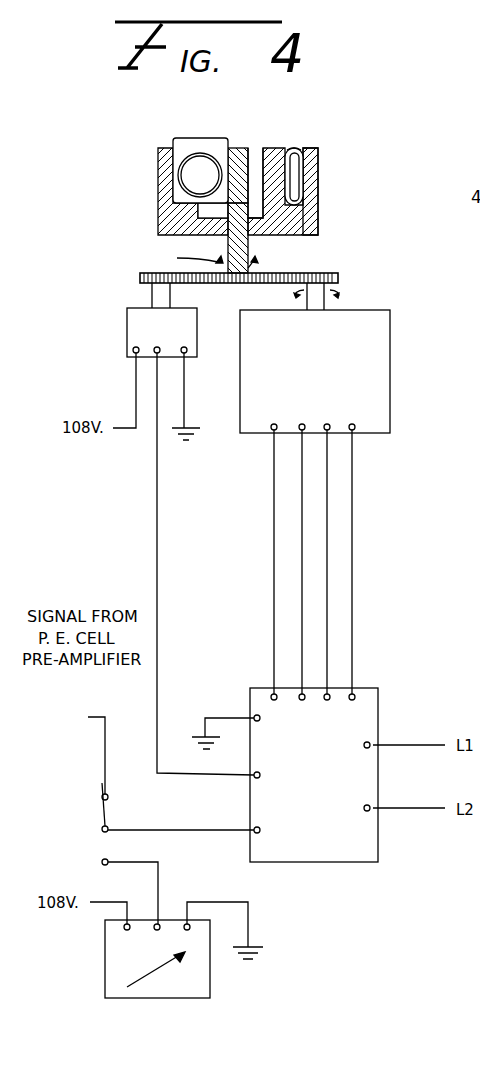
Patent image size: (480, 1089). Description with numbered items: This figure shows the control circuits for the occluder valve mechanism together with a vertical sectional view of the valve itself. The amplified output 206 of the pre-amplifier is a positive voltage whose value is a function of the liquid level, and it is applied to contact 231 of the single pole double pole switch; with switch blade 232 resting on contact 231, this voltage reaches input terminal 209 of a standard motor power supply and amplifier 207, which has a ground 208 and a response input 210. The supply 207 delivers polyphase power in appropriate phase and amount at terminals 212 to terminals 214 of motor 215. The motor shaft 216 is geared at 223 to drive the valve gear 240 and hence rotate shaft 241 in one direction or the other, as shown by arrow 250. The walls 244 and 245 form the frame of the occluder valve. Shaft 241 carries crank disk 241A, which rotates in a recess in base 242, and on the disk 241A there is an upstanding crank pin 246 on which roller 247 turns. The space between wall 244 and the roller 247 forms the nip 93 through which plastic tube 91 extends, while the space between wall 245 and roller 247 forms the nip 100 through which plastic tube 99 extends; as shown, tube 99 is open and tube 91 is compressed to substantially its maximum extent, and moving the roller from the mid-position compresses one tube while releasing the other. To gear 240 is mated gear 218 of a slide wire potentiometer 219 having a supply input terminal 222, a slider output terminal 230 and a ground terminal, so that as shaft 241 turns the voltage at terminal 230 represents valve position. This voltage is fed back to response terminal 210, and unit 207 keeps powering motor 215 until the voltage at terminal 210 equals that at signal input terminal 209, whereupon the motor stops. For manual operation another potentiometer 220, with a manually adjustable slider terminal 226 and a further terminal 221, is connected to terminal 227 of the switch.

The plastic tube 99 is at (180, 165).
The nip 100 is at (200, 138).
The roller 247 is at (236, 148).
The crank pin 246 is at (253, 148).
The nip 93 is at (286, 145).
The plastic tube 91 is at (299, 148).
The wall 245 is at (158, 177).
The wall 244 is at (308, 178).
The crank disk 241A is at (200, 213).
The base 242 is at (307, 218).
The shaft 241 is at (228, 235).
The arrow 250 is at (201, 258).
The valve gear 240 is at (268, 274).
The gear 218 is at (140, 275).
The gearing 223 is at (338, 277).
The motor shaft 216 is at (327, 303).
The slide wire potentiometer 219 is at (128, 315).
The input terminal 222 is at (133, 350).
The slider output terminal 230 is at (157, 351).
The motor 215 is at (363, 346).
The motor terminals 214 is at (276, 430).
The output terminals 212 is at (276, 695).
The motor power supply and amplifier 207 is at (340, 728).
The ground 208 is at (257, 715).
The response input terminal 210 is at (257, 778).
The signal input terminal 209 is at (257, 833).
The amplified output 206 is at (73, 751).
The switch contact 231 is at (108, 797).
The switch blade 232 is at (103, 810).
The switch terminal 227 is at (102, 862).
The potentiometer 220 is at (193, 980).
The terminal 221 is at (130, 925).
The manually adjustable slider terminal 226 is at (162, 925).